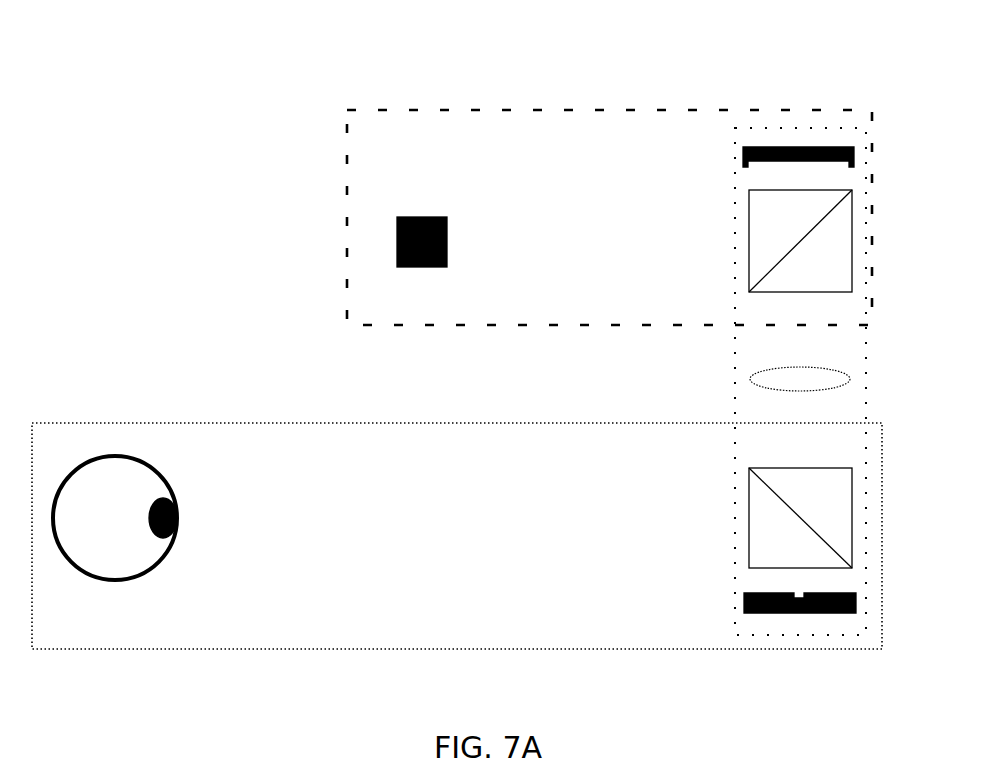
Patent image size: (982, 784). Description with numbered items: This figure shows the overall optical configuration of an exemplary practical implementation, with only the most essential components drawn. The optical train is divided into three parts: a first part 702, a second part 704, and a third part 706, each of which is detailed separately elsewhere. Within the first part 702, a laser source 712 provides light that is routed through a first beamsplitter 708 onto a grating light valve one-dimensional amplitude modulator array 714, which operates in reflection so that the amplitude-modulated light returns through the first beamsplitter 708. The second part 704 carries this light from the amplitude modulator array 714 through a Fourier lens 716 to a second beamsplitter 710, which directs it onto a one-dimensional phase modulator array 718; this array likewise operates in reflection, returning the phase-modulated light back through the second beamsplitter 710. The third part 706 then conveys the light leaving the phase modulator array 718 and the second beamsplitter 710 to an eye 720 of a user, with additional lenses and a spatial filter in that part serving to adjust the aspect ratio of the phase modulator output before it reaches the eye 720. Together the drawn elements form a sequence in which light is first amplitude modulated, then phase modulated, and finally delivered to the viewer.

The first part of the optical train 702 is at (347, 143).
The second part of the optical train 704 is at (866, 367).
The third part of the optical train 706 is at (240, 649).
The first beamsplitter 708 is at (838, 243).
The second beamsplitter 710 is at (835, 522).
The laser source 712 is at (397, 245).
The grating light valve 1-D amplitude modulator array 714 is at (795, 147).
The Fourier lens 716 is at (765, 378).
The 1-D phase modulator array 718 is at (806, 613).
The eye of a user 720 is at (112, 563).